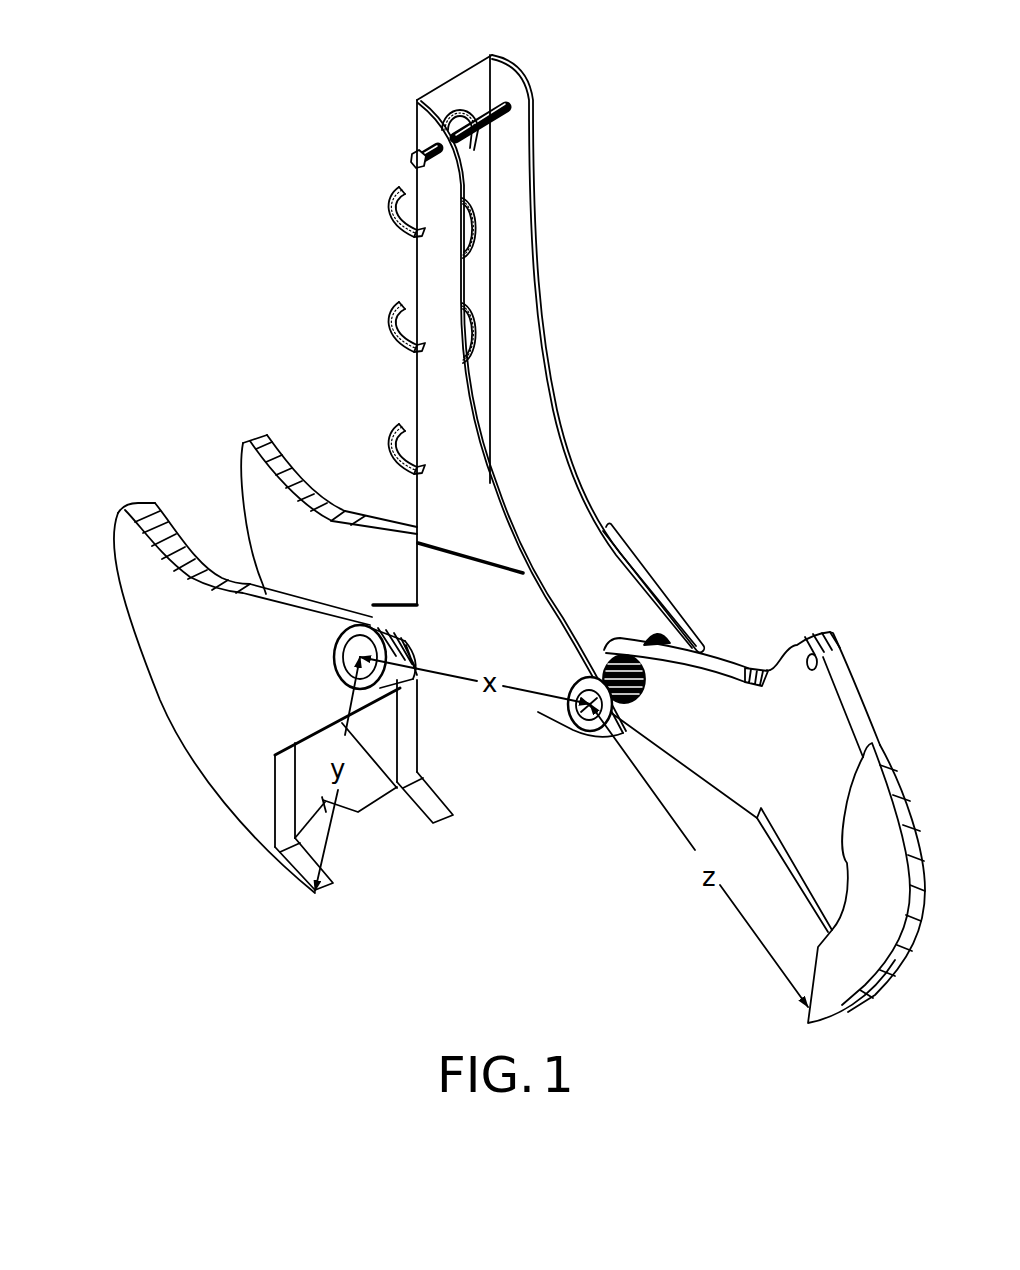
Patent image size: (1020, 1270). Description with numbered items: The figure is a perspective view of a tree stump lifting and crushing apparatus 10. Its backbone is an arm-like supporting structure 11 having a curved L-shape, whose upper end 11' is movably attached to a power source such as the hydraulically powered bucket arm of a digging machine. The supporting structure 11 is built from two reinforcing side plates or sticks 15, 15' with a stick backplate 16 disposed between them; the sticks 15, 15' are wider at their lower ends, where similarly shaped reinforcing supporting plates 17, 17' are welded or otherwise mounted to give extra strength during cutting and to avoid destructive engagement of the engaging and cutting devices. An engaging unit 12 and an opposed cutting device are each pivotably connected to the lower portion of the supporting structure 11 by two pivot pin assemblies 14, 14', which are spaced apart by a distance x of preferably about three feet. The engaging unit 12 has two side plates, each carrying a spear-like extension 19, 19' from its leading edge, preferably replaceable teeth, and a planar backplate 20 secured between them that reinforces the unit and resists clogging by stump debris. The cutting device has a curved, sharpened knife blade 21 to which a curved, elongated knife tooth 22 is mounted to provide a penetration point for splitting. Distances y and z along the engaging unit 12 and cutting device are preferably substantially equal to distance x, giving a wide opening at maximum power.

The tree stump lifting and crushing apparatus 10 is at (725, 207).
The supporting structure 11 is at (534, 396).
The upper end of supporting structure 11' is at (516, 70).
The engaging unit 12 is at (118, 668).
The pivot pin assembly 14 is at (357, 666).
The pivot pin assembly 14' is at (577, 729).
The stick 15 is at (386, 330).
The stick 15' is at (518, 236).
The stick backplate 16 is at (445, 82).
The supporting plate 17 is at (470, 588).
The supporting plate 17' is at (665, 587).
The spear-like extension 19 is at (337, 821).
The spear-like extension 19' is at (418, 751).
The backplate 20 is at (367, 815).
The knife blade 21 is at (846, 668).
The knife tooth 22 is at (862, 979).